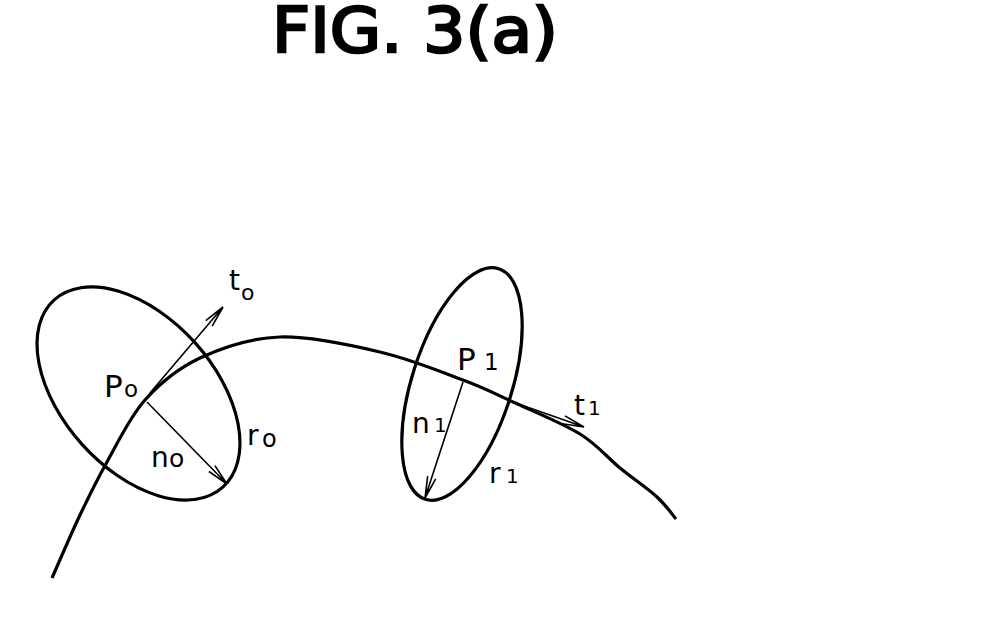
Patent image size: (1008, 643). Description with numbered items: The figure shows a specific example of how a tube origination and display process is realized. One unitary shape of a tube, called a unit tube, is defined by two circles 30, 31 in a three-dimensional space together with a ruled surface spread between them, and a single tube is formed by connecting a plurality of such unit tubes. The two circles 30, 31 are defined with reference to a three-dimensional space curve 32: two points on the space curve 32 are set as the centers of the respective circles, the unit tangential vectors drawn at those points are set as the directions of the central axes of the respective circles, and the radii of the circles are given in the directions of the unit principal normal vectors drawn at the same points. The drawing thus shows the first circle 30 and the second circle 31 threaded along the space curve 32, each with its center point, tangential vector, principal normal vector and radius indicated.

The circle 30 is at (87, 287).
The circle 31 is at (450, 292).
The three-dimensional space curve 32 is at (670, 507).